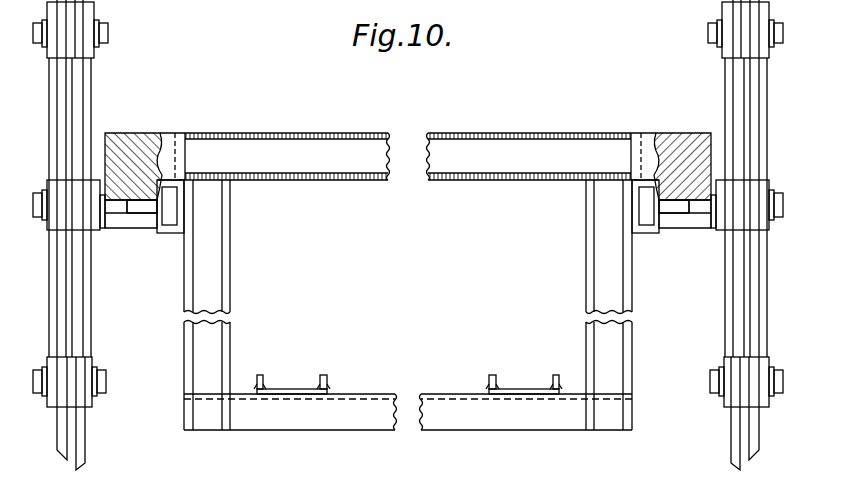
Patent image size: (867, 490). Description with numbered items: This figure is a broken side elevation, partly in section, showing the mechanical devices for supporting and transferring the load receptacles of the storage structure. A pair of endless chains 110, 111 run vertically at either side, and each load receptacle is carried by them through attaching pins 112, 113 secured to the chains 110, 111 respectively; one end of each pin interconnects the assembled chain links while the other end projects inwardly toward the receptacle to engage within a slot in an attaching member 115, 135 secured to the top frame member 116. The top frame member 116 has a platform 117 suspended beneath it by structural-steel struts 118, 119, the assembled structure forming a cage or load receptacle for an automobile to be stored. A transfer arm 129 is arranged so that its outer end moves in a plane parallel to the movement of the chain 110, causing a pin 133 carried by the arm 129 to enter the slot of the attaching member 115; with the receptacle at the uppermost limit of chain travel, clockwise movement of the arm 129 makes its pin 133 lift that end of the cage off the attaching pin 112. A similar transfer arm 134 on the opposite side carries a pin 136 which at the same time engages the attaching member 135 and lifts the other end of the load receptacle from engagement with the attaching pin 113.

The endless chain 110 is at (82, 90).
The endless chain 111 is at (757, 100).
The attaching pin 112 is at (115, 212).
The attaching pin 113 is at (705, 212).
The attaching member 115 is at (135, 145).
The top frame member 116 is at (305, 146).
The platform 117 is at (352, 397).
The structural-steel strut 118 is at (230, 269).
The structural-steel strut 119 is at (588, 270).
The transfer arm 129 is at (166, 215).
The pin 133 is at (147, 212).
The transfer arm 134 is at (648, 224).
The attaching member 135 is at (678, 146).
The pin 136 is at (675, 212).